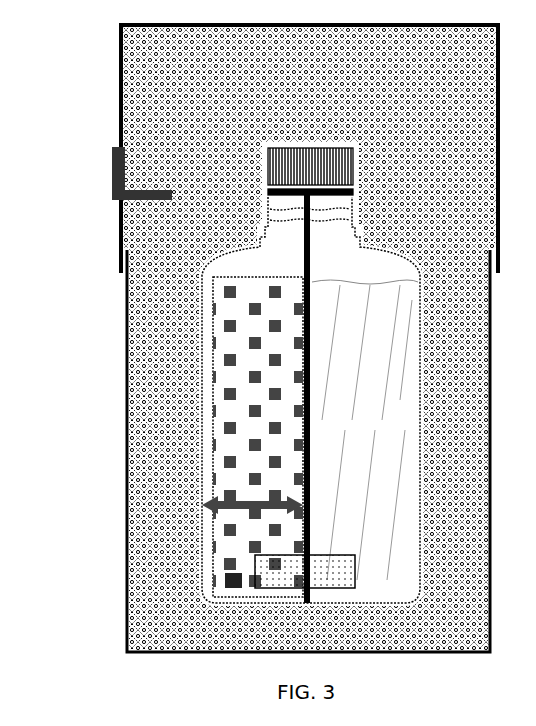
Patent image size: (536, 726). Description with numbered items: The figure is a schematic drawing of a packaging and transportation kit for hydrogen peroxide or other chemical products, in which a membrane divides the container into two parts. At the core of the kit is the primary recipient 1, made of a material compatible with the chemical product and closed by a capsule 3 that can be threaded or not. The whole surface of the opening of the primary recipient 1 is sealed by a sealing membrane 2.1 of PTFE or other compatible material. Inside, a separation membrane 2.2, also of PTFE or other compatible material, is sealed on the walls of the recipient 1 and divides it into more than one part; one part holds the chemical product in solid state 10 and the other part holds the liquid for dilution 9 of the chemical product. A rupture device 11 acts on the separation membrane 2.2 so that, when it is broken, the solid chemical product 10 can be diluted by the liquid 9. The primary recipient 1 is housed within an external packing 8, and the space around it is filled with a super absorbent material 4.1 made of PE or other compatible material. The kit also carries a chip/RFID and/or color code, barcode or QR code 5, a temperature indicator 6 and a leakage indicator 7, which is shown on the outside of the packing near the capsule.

The primary recipient 1 is at (208, 330).
The sealing membrane 2.1 is at (185, 218).
The separation membrane 2.2 is at (298, 261).
The capsule 3 is at (264, 152).
The super absorbent material 4.1 is at (148, 65).
The chip/RFID and/or color code, barcode or QR code 5 is at (255, 560).
The temperature indicator 6 is at (221, 588).
The leakage indicator 7 is at (108, 172).
The external packing 8 is at (124, 457).
The liquid for dilution 9 is at (328, 418).
The chemical product in solid state 10 is at (220, 380).
The rupture device 11 is at (205, 505).